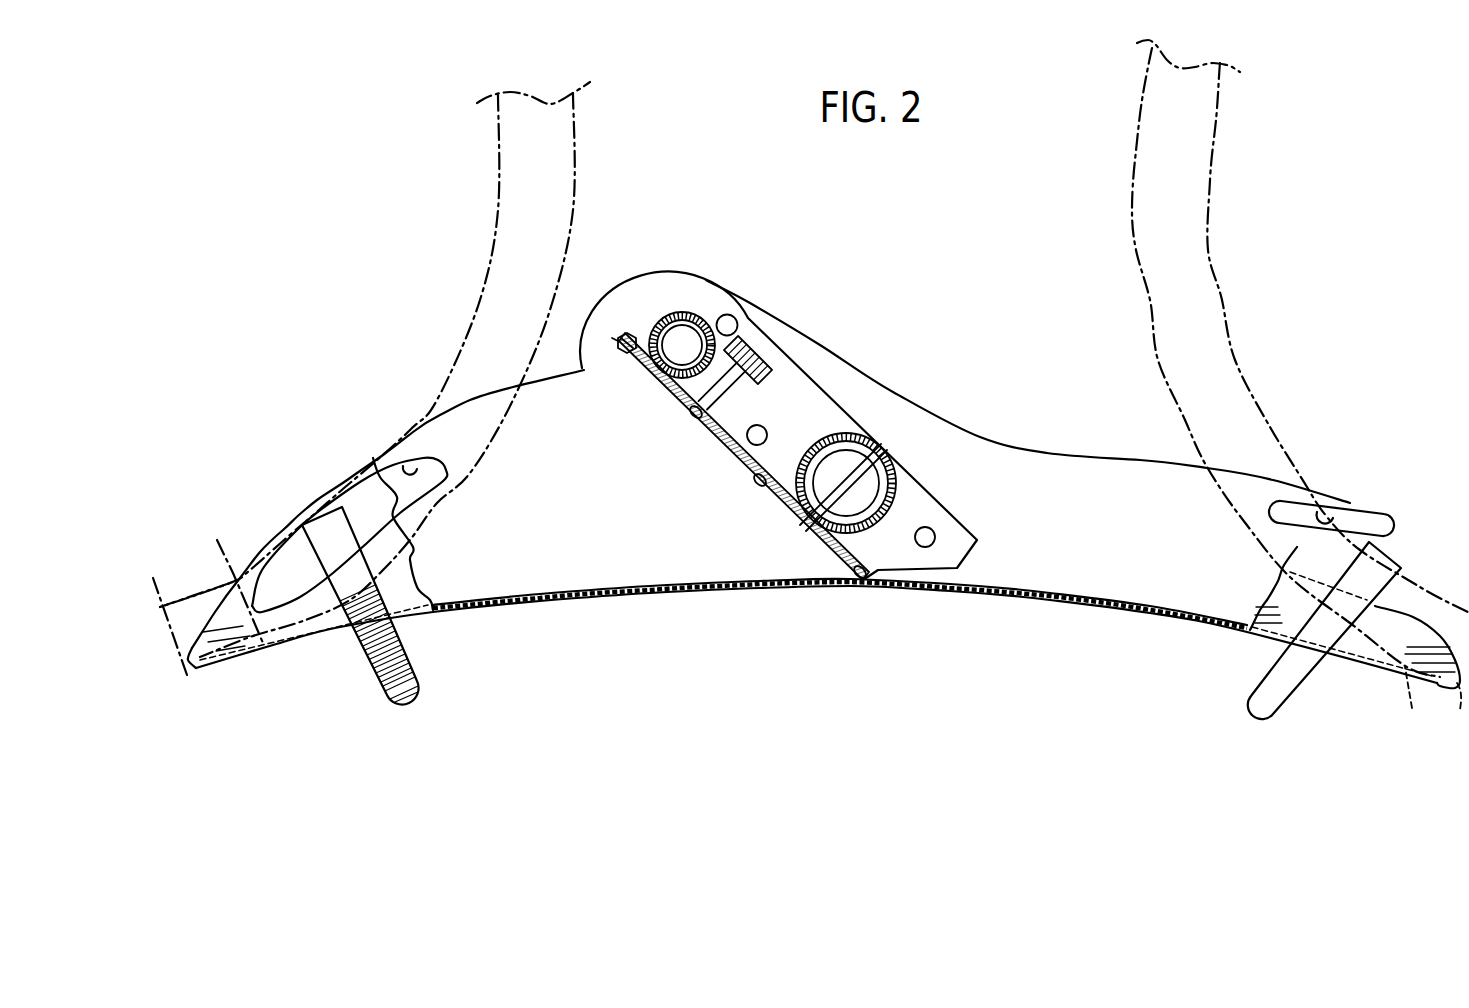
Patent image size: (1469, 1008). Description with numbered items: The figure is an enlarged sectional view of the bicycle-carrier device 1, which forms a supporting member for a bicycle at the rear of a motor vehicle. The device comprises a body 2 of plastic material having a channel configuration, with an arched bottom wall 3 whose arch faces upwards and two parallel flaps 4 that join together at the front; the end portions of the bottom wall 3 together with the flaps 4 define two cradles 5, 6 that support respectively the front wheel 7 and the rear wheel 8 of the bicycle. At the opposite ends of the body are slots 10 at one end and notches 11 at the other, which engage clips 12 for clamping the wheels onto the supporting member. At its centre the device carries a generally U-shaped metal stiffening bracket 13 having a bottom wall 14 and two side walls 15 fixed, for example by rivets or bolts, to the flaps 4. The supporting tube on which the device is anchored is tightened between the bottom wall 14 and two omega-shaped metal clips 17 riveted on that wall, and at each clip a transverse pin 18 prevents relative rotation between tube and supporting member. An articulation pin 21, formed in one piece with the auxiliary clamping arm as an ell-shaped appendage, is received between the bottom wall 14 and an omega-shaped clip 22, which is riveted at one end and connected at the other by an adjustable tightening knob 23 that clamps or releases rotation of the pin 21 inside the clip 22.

The bicycle-carrier device 1 is at (783, 348).
The body 2 is at (980, 333).
The bottom wall 3 is at (645, 597).
The flaps 4 is at (990, 465).
The cradle 5 is at (208, 597).
The cradle 6 is at (1433, 701).
The front wheel 7 is at (517, 240).
The rear wheel 8 is at (1197, 278).
The slots 10 is at (420, 466).
The notches 11 is at (1335, 525).
The clips 12 is at (413, 663).
The stiffening bracket 13 is at (717, 472).
The bottom wall 14 is at (655, 385).
The side walls 15 is at (817, 407).
The omega-shaped metal clips 17 is at (887, 518).
The transverse pin 18 is at (843, 442).
The articulation pin 21 is at (663, 315).
The omega-shaped clip 22 is at (700, 312).
The adjustable tightening knob 23 is at (763, 367).